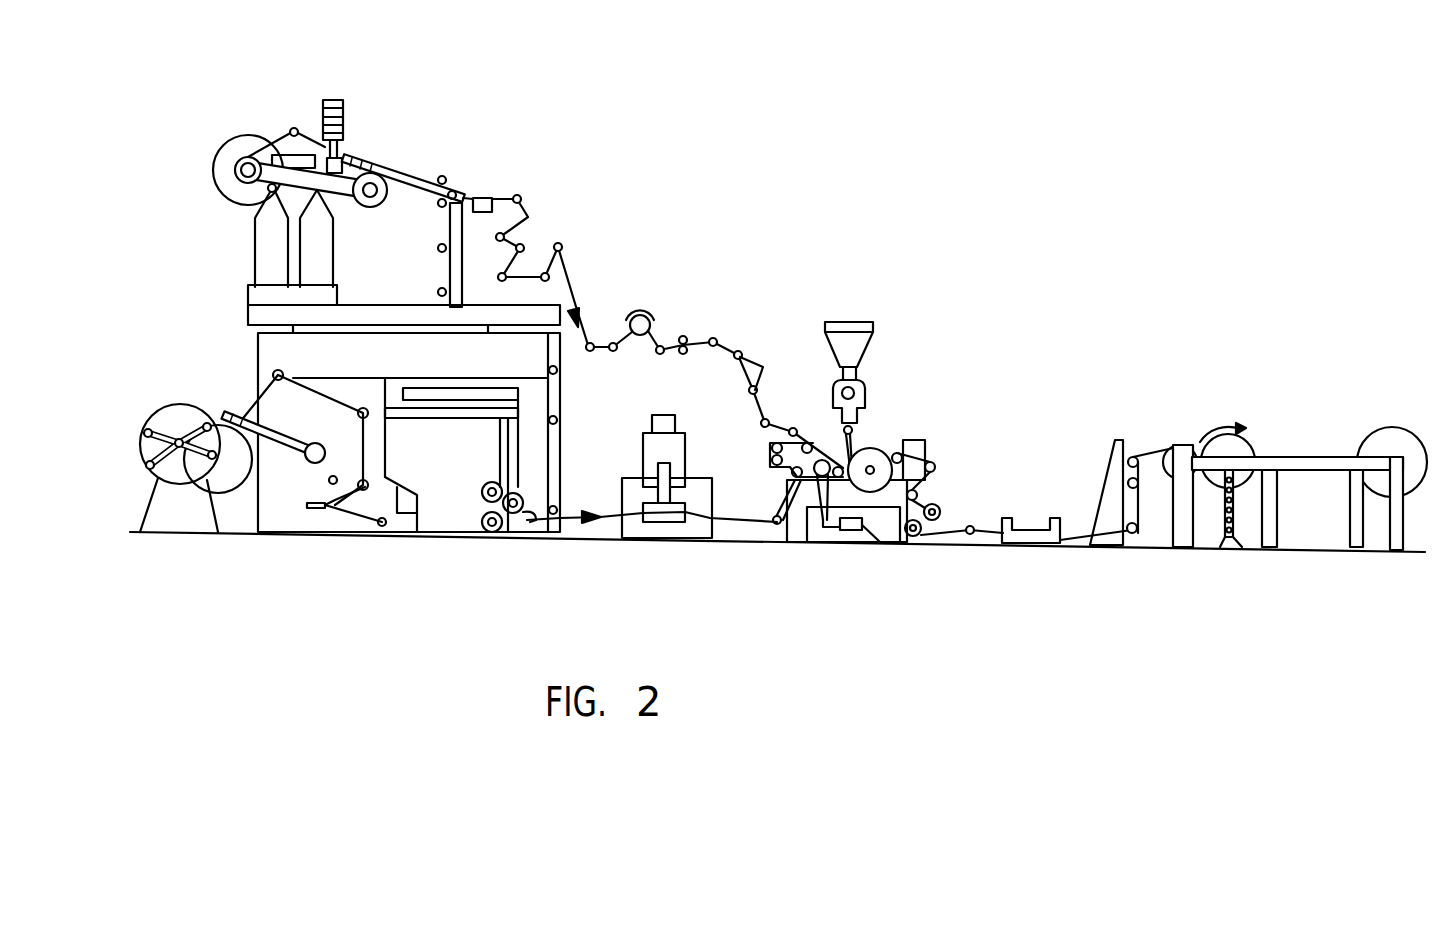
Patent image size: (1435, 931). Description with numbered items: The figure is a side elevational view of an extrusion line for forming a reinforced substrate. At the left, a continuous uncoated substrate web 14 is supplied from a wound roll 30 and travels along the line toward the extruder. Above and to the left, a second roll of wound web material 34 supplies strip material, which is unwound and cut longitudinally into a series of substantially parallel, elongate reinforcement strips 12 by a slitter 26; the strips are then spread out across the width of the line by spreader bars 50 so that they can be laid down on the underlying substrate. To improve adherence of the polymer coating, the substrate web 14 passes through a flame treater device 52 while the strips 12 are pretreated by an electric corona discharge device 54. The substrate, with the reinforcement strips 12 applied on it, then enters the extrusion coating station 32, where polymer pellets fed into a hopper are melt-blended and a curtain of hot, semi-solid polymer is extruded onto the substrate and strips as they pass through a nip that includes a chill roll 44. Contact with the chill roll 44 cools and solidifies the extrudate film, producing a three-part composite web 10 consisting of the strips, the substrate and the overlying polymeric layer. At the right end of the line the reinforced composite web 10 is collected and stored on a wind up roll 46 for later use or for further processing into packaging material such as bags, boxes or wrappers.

The composite web product 10 is at (957, 542).
The reinforcement strips 12 is at (735, 340).
The substrate web 14 is at (734, 527).
The slitter 26 is at (690, 337).
The wound roll 30 is at (236, 495).
The extrusion coating station 32 is at (875, 340).
The second roll of wound web material 34 is at (250, 137).
The chill roll 44 is at (874, 448).
The wind up roll 46 is at (1247, 442).
The spreader bars 50 is at (764, 367).
The flame treater device 52 is at (643, 445).
The electric corona discharge device 54 is at (634, 318).